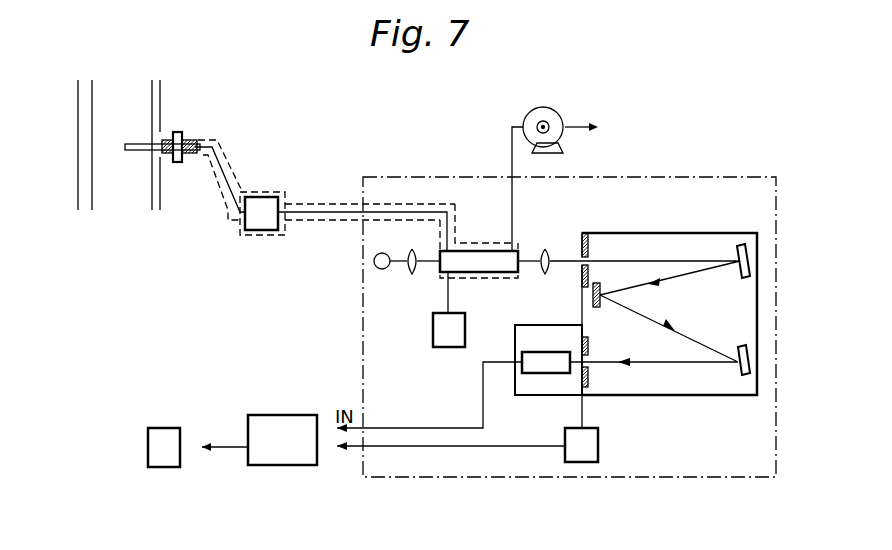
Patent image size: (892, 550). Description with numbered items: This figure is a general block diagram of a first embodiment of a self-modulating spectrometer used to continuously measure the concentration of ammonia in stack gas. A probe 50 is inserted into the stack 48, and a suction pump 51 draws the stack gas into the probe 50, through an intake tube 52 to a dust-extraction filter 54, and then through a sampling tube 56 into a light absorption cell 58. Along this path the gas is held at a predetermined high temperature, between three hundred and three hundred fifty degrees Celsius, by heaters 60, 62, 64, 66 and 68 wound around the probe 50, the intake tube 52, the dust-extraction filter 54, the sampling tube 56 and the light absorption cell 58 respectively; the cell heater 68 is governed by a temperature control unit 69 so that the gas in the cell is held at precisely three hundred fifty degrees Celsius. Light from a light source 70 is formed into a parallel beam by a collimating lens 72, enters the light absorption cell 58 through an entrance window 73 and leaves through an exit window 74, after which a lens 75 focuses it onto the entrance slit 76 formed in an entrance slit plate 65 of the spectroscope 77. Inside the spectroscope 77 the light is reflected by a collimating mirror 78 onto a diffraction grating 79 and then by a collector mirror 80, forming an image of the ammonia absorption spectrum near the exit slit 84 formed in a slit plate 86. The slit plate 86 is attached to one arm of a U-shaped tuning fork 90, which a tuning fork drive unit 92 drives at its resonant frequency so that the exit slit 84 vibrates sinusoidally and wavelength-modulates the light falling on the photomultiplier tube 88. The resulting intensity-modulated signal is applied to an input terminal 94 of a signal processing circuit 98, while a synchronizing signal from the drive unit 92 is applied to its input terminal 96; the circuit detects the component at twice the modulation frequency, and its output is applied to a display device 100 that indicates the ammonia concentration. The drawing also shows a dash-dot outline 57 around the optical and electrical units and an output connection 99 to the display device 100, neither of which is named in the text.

The stack 48 is at (162, 93).
The probe 50 is at (140, 152).
The suction pump 51 is at (553, 107).
The intake tube 52 is at (220, 167).
The dust-extraction filter 54 is at (263, 193).
The sampling tube 56 is at (323, 204).
The analyzer housing 57 is at (680, 177).
The light absorption cell 58 is at (478, 242).
The heater 60 is at (190, 155).
The heater 62 is at (227, 220).
The heater 64 is at (262, 235).
The entrance slit 65 is at (600, 237).
The heater 66 is at (323, 220).
The cell heater 68 is at (485, 280).
The temperature control unit 69 is at (448, 347).
The light source 70 is at (382, 269).
The collimating lens 72 is at (412, 274).
The entrance window 73 is at (438, 255).
The exit window 74 is at (518, 250).
The lens 75 is at (545, 274).
The entrance slit 76 is at (580, 253).
The spectroscope 77 is at (663, 233).
The collimating mirror 78 is at (742, 245).
The diffraction grating 79 is at (598, 307).
The collector mirror 80 is at (742, 377).
The exit slit 84 is at (592, 353).
The slit plate 86 is at (590, 378).
The photomultiplier tube 88 is at (543, 375).
The U-shaped tuning fork 90 is at (587, 417).
The tuning fork drive unit 92 is at (602, 450).
The input terminal 94 is at (318, 425).
The input terminal 96 is at (317, 452).
The signal processing circuit 98 is at (290, 465).
The output line 99 is at (247, 442).
The display device 100 is at (168, 467).